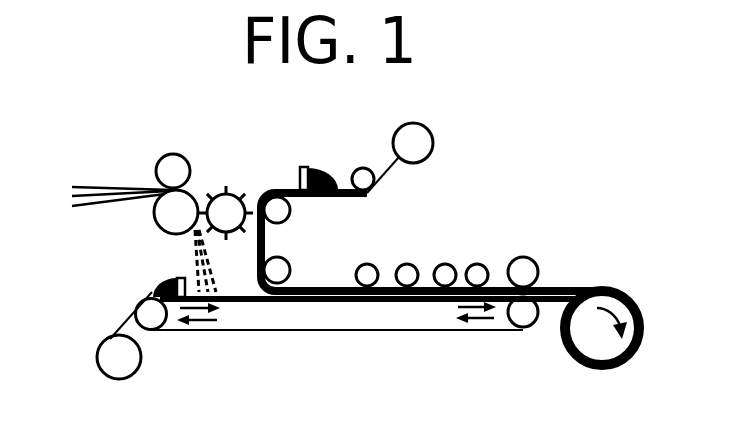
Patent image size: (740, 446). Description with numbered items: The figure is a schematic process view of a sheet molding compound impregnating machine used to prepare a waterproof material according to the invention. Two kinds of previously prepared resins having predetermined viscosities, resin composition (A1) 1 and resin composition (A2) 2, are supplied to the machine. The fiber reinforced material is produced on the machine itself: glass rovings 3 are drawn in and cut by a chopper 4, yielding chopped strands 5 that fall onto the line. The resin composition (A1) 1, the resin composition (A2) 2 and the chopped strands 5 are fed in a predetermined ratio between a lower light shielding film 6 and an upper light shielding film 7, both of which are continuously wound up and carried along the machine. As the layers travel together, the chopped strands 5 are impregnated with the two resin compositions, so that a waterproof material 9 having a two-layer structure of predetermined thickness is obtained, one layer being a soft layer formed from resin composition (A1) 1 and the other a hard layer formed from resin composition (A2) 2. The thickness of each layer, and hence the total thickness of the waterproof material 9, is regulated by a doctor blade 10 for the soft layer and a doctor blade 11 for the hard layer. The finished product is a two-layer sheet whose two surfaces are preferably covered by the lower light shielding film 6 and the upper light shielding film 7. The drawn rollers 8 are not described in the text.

The resin composition (A1) 1 is at (153, 286).
The resin composition (A2) 2 is at (322, 167).
The glass rovings 3 is at (110, 188).
The chopper 4 is at (232, 190).
The chopped strands 5 is at (180, 277).
The lower light shielding film 6 is at (110, 335).
The upper light shielding film 7 is at (400, 172).
The support rollers 8 is at (445, 263).
The waterproof material 9 is at (603, 287).
The doctor blade 10 is at (177, 277).
The doctor blade 11 is at (304, 166).